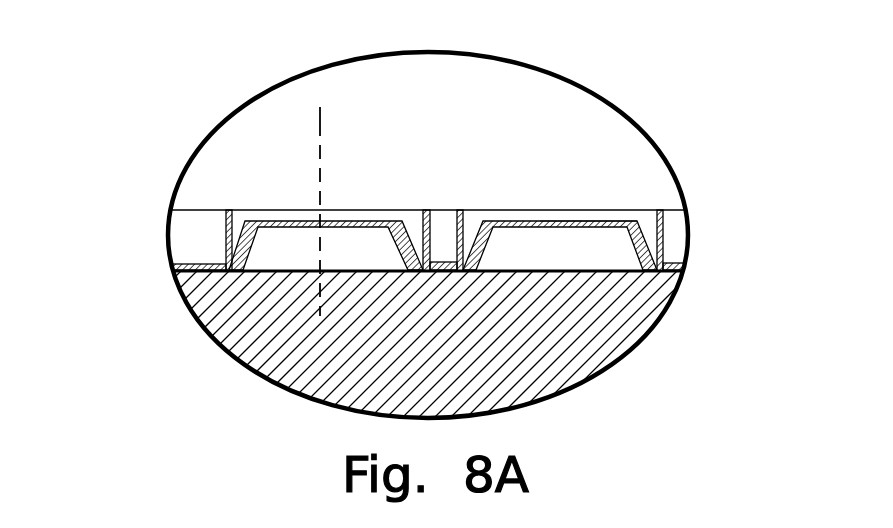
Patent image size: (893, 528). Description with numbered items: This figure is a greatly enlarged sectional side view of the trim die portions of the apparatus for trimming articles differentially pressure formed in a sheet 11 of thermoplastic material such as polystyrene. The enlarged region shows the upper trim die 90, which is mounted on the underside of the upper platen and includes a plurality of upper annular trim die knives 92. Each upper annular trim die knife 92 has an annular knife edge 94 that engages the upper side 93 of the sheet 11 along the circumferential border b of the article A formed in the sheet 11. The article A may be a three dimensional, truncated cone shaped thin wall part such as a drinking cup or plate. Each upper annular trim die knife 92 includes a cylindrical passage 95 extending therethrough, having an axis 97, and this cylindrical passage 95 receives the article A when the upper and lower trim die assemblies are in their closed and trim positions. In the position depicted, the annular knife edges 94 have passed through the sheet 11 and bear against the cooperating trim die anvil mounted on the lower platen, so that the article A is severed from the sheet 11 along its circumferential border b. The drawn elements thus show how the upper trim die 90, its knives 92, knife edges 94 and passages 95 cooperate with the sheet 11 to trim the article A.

The upper trim die 90 is at (188, 99).
The sheet 11 is at (175, 270).
The upper side of the sheet 93 is at (192, 263).
The annular knife edge 94 is at (680, 279).
The upper annular trim die knife 92 is at (227, 226).
The cylindrical passage 95 is at (358, 244).
The axis 97 is at (324, 112).
The article A is at (606, 220).
The circumferential border b is at (465, 267).